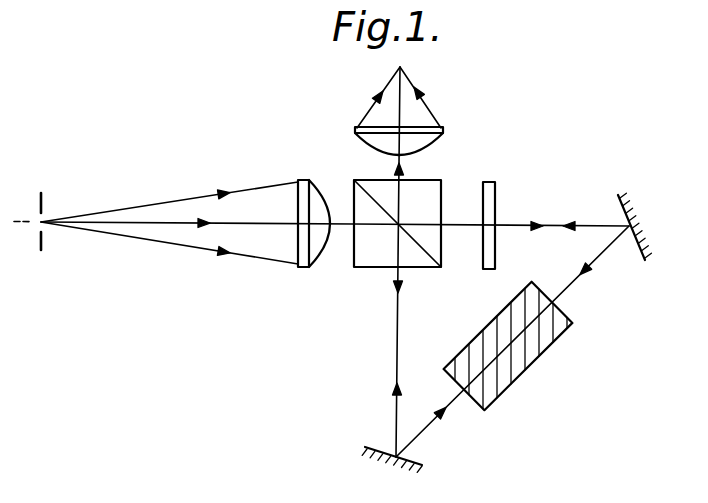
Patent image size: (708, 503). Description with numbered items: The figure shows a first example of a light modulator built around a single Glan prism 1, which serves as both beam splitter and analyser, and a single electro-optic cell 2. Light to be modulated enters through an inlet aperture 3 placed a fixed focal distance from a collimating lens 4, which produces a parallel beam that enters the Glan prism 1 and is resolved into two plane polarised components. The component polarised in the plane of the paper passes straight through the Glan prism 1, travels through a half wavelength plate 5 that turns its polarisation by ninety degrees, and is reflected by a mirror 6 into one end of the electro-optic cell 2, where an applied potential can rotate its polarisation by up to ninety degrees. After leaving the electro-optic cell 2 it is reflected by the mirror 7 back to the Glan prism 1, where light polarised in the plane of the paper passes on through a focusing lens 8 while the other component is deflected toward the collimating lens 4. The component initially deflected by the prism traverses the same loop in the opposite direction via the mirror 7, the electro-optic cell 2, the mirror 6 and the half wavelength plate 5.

The Glan prism 1 is at (437, 191).
The electro-optic cell 2 is at (550, 340).
The inlet aperture 3 is at (43, 202).
The collimating lens 4 is at (313, 190).
The half wavelength plate 5 is at (490, 194).
The mirror 6 is at (633, 213).
The mirror 7 is at (416, 463).
The focusing lens 8 is at (430, 130).